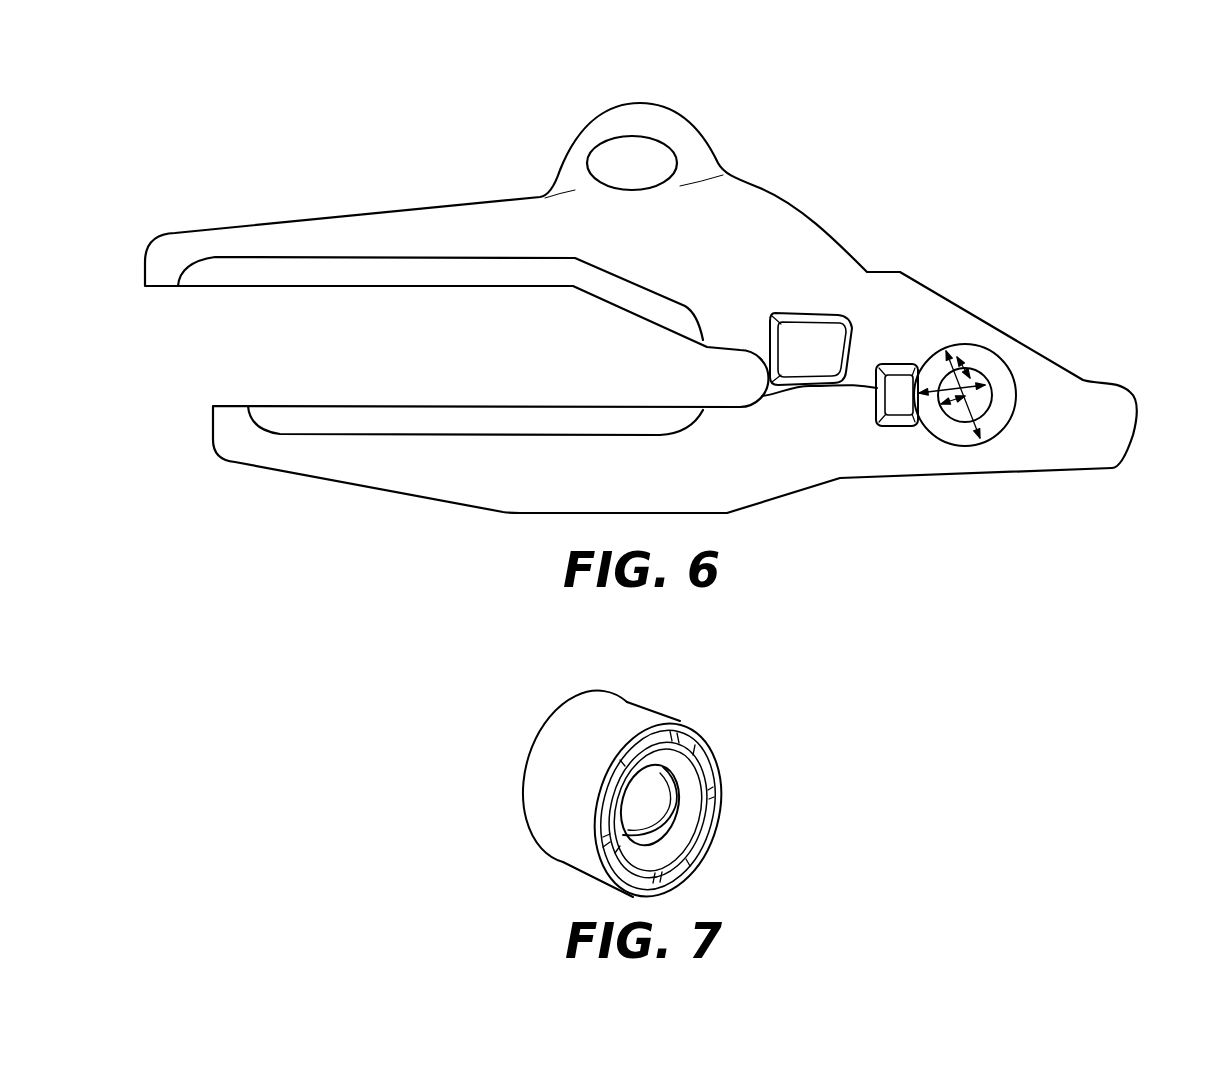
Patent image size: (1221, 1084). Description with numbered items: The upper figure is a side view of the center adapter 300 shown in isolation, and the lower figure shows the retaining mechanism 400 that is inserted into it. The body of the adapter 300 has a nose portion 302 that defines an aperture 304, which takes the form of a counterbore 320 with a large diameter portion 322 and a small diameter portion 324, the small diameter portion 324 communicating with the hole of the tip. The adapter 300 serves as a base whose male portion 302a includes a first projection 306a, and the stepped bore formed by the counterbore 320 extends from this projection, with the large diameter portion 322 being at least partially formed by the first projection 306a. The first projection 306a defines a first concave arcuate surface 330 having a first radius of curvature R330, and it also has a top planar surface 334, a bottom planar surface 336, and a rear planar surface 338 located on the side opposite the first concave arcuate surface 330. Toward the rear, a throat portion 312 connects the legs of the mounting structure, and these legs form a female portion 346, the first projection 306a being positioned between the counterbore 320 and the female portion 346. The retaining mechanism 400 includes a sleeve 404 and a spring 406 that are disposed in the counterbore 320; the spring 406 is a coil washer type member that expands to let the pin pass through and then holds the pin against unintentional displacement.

In FIG. 6, the center adapter 300 is at (803, 118).
In FIG. 6, the nose portion 302 is at (1062, 448).
In FIG. 6, the male portion 302a is at (1095, 448).
In FIG. 6, the aperture 304 is at (968, 376).
In FIG. 6, the first projection 306a is at (901, 364).
In FIG. 6, the throat portion 312 is at (843, 422).
In FIG. 6, the counterbore 320 is at (993, 362).
In FIG. 6, the large diameter portion 322 is at (955, 350).
In FIG. 6, the small diameter portion 324 is at (968, 440).
In FIG. 6, the first concave arcuate surface 330 is at (917, 400).
In FIG. 6, the first radius of curvature R330 is at (962, 406).
In FIG. 6, the top planar surface 334 is at (893, 364).
In FIG. 6, the bottom planar surface 336 is at (905, 428).
In FIG. 6, the rear planar surface 338 is at (765, 392).
In FIG. 6, the female portion 346 is at (470, 507).
In FIG. 7, the retaining mechanism 400 is at (657, 782).
In FIG. 7, the sleeve 404 is at (722, 772).
In FIG. 7, the spring 406 is at (667, 855).